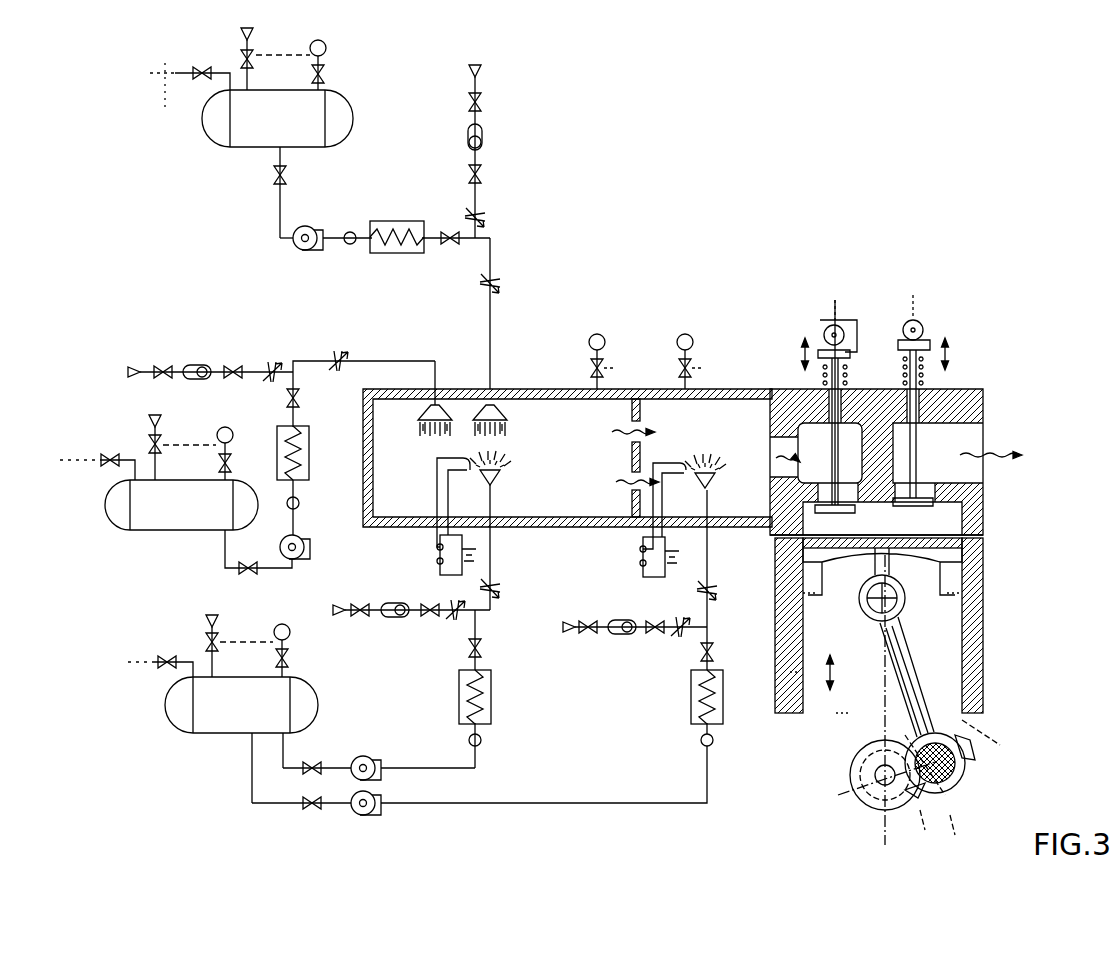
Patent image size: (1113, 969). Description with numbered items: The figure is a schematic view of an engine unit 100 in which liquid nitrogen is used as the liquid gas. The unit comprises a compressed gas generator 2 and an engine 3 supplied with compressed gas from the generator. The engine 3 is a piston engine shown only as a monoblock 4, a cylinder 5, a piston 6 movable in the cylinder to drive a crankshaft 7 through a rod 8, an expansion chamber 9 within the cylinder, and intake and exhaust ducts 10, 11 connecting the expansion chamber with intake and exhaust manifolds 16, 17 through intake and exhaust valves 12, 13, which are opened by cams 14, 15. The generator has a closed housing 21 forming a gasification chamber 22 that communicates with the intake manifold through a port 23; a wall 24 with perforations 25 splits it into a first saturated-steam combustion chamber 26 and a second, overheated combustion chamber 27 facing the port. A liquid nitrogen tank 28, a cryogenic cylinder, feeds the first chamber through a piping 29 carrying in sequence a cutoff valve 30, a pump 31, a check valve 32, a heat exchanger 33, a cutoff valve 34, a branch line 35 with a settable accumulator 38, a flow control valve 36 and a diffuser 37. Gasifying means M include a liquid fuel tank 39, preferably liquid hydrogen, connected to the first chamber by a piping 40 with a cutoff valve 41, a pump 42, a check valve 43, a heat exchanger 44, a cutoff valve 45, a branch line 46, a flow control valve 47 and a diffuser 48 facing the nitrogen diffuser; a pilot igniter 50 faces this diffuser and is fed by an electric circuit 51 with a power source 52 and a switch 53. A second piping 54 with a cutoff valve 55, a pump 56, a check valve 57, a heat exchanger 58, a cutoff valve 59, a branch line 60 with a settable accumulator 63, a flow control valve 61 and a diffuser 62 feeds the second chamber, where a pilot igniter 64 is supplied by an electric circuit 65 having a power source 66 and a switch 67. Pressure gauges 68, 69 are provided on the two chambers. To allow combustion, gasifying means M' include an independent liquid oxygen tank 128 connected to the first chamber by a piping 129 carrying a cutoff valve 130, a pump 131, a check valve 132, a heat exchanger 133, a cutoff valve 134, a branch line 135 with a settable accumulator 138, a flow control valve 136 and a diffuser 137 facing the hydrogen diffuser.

The compressed gas generator 2 is at (627, 215).
The engine 3 is at (965, 302).
The monoblock 4 is at (977, 385).
The cylinder 5 is at (775, 600).
The piston 6 is at (810, 650).
The crankshaft 7 is at (852, 772).
The rod 8 is at (912, 665).
The expansion chamber 9 is at (880, 520).
The intake duct 10 is at (860, 600).
The exhaust duct 11 is at (921, 492).
The intake valve 12 is at (850, 428).
The exhaust valve 13 is at (932, 410).
The cam 14 is at (828, 330).
The cam 15 is at (908, 318).
The intake manifold 16 is at (815, 438).
The exhaust manifold 17 is at (986, 440).
The housing 21 is at (725, 388).
The gasification chamber 22 is at (662, 395).
The port 23 is at (775, 452).
The wall 24 is at (642, 462).
The perforations 25 is at (618, 430).
The first saturated-steam combustion chamber 26 is at (600, 502).
The second overheated combustion chamber 27 is at (752, 510).
The liquid nitrogen tank 28 is at (172, 525).
The piping 29 is at (295, 355).
The cutoff valve 30 is at (245, 572).
The pump 31 is at (305, 547).
The check valve 32 is at (300, 503).
The heat exchanger 33 is at (312, 462).
The cutoff valve 34 is at (302, 398).
The branch line 35 is at (278, 362).
The flow control valve 36 is at (338, 357).
The diffuser 37 is at (438, 396).
The settable accumulator 38 is at (197, 365).
The liquid fuel tank 39 is at (208, 732).
The piping 40 is at (413, 733).
The cutoff valve 41 is at (398, 617).
The pump 42 is at (368, 756).
The check valve 43 is at (483, 742).
The heat exchanger 44 is at (494, 697).
The cutoff valve 45 is at (482, 648).
The branch line 46 is at (455, 620).
The flow control valve 47 is at (497, 588).
The diffuser 48 is at (496, 480).
The pilot igniter 50 is at (436, 456).
The electric circuit 51 is at (445, 576).
The power source 52 is at (490, 560).
The switch 53 is at (432, 550).
The piping 54 is at (672, 800).
The cutoff valve 55 is at (310, 812).
The pump 56 is at (366, 818).
The check valve 57 is at (715, 744).
The heat exchanger 58 is at (724, 698).
The cutoff valve 59 is at (713, 652).
The branch line 60 is at (682, 633).
The flow control valve 61 is at (714, 588).
The diffuser 62 is at (708, 483).
The settable accumulator 63 is at (624, 636).
The pilot igniter 64 is at (682, 476).
The electric circuit 65 is at (655, 582).
The power source 66 is at (690, 550).
The switch 67 is at (641, 550).
The pressure gauge 68 is at (600, 330).
The pressure gauge 69 is at (694, 340).
The engine unit 100 is at (722, 252).
The liquid oxygen tank 128 is at (218, 123).
The piping 129 is at (494, 258).
The cutoff valve 130 is at (272, 177).
The pump 131 is at (302, 250).
The check valve 132 is at (349, 245).
The heat exchanger 133 is at (405, 255).
The cutoff valve 134 is at (450, 246).
The branch line 135 is at (485, 225).
The flow control valve 136 is at (498, 290).
The diffuser 137 is at (496, 396).
The settable accumulator 138 is at (482, 140).
The gasifying means M is at (540, 839).
The gasifying means M' is at (397, 71).